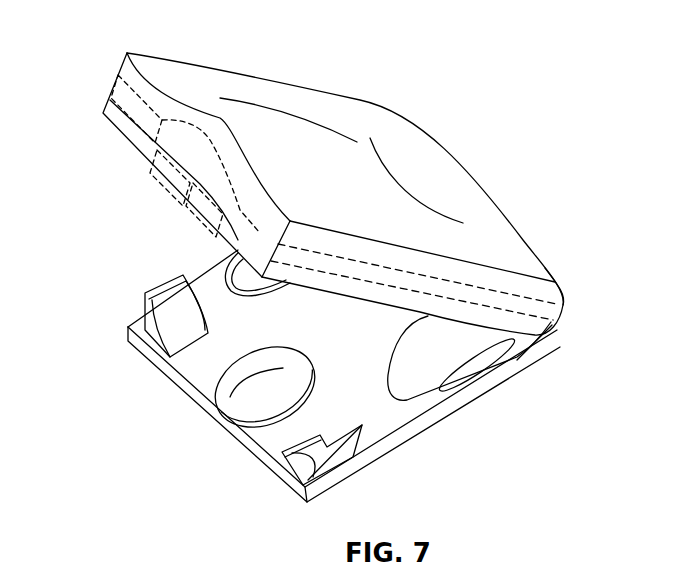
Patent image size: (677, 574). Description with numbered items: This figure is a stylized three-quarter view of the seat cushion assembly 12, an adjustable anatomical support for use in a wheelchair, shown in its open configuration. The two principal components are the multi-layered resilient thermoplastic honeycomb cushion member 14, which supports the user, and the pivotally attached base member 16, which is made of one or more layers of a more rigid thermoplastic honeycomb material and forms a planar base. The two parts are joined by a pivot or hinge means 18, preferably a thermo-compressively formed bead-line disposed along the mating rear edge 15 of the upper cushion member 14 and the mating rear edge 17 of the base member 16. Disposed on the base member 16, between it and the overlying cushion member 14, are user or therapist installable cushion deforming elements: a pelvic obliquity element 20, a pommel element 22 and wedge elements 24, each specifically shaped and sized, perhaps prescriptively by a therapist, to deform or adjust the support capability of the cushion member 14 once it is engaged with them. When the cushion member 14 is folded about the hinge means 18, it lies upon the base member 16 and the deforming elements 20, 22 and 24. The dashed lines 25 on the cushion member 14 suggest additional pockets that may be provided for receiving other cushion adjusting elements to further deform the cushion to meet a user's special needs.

The seat cushion assembly 12 is at (371, 385).
The cushion member 14 is at (358, 110).
The rear edge of the upper cushion member 15 is at (561, 307).
The base member 16 is at (296, 488).
The rear edge of the base member 17 is at (527, 356).
The pivot or hinge means 18 is at (553, 331).
The pelvic obliquity element 20 is at (428, 368).
The pommel element 22 is at (243, 408).
The wedge element 24 is at (163, 330).
The dashed lines 25 is at (115, 122).